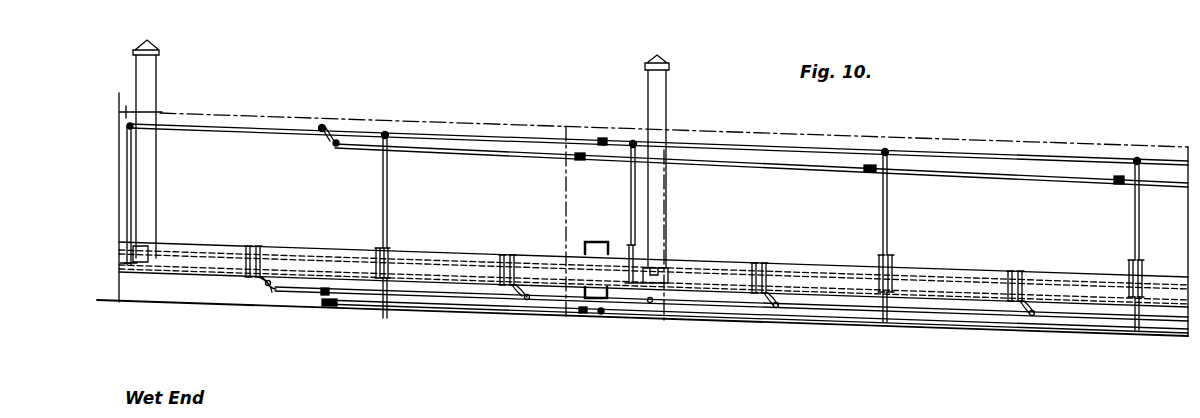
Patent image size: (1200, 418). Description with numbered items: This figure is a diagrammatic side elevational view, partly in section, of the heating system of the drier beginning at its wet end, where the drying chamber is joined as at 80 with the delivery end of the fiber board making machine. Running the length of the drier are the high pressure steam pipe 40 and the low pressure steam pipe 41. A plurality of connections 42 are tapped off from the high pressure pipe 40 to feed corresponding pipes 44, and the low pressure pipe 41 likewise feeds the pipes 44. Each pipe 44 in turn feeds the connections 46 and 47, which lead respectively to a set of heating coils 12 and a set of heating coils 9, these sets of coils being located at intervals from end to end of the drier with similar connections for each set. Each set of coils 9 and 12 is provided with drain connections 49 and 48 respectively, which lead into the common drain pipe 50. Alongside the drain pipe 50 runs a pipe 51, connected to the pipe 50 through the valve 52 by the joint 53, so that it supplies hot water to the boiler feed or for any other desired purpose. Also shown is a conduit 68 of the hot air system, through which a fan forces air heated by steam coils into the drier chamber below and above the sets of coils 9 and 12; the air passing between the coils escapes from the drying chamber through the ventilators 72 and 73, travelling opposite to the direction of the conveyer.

The heating coils 9 is at (198, 271).
The heating coils 12 is at (191, 252).
The high pressure steam pipe 40 is at (214, 127).
The low pressure steam pipe 41 is at (518, 157).
The connection 42 is at (387, 130).
The pipe 44 is at (381, 224).
The connection 46 is at (389, 261).
The connection 47 is at (383, 318).
The drain connection 48 is at (262, 248).
The drain connection 49 is at (250, 273).
The common drain pipe 50 is at (454, 297).
The pipe 51 is at (429, 310).
The valve 52 is at (332, 307).
The joint 53 is at (322, 297).
The conduit 68 is at (597, 240).
The ventilator 72 is at (149, 176).
The ventilator 73 is at (658, 197).
The joint to delivery end 80 is at (118, 197).